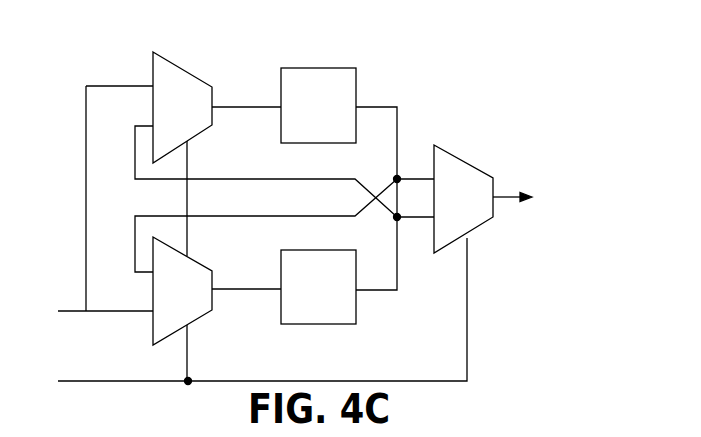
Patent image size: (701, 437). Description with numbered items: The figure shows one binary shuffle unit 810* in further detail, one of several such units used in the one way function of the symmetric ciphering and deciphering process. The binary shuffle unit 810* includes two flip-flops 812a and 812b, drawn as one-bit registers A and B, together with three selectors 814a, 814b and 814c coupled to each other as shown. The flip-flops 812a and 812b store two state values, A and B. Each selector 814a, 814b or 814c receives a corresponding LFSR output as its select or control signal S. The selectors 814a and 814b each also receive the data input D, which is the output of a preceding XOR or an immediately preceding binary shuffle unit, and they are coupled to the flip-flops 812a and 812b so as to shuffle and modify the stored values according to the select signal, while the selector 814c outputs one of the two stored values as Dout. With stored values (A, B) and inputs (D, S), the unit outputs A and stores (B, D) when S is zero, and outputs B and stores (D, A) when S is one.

The binary shuffle unit 810 is at (661, 129).
The selector 814a is at (190, 78).
The selector 814b is at (157, 325).
The selector 814c is at (480, 222).
The flip-flop 812a is at (299, 135).
The flip-flop 812b is at (311, 257).